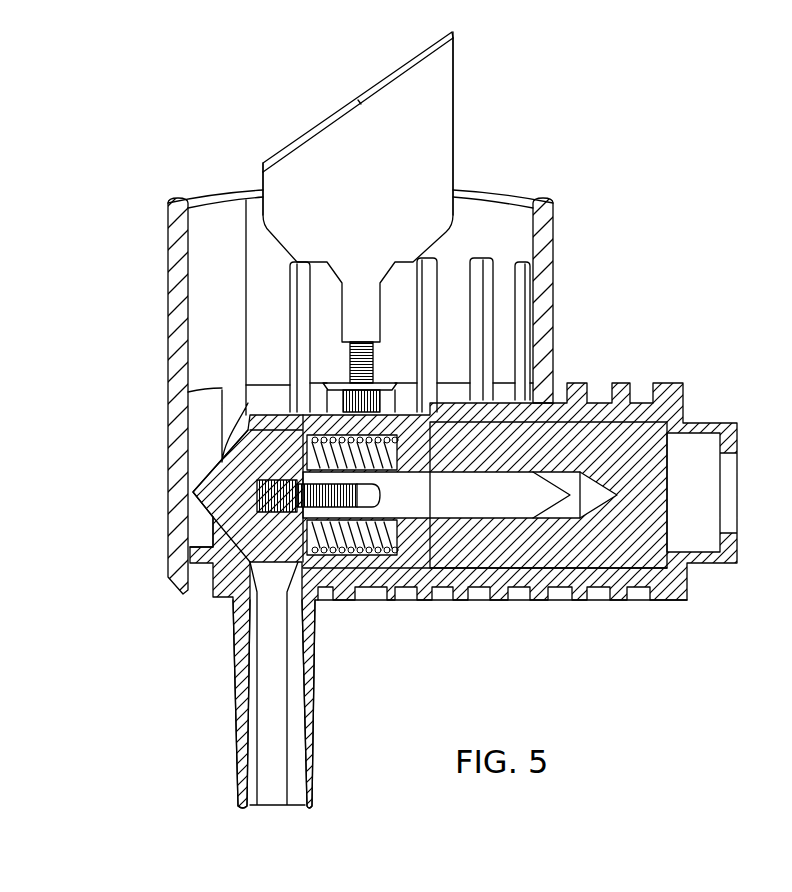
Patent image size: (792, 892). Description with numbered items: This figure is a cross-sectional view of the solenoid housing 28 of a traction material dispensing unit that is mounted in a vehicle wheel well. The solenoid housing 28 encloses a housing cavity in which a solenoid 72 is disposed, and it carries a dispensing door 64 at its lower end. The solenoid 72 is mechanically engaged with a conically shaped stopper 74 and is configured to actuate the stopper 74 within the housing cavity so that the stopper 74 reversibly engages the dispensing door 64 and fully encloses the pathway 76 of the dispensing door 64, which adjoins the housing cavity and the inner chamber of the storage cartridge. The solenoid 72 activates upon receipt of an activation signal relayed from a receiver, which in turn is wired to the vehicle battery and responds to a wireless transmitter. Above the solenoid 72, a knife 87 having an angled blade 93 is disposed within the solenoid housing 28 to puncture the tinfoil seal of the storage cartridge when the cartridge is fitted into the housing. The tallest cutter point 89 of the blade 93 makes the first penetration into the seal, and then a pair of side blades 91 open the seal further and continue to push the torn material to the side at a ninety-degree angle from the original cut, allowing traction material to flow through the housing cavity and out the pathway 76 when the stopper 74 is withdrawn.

The solenoid housing 28 is at (666, 381).
The dispensing door 64 is at (238, 742).
The solenoid 72 is at (613, 548).
The stopper 74 is at (212, 533).
The pathway 76 is at (272, 698).
The knife 87 is at (261, 167).
The tallest cutter point 89 is at (448, 32).
The side blades 91 is at (453, 114).
The angled blade 93 is at (312, 127).